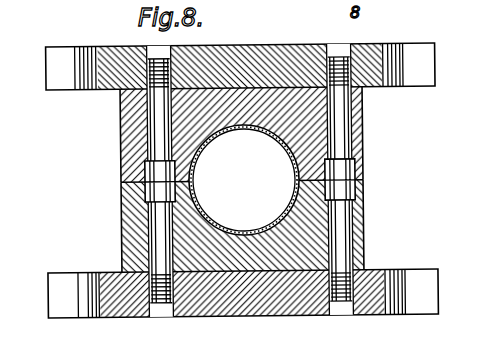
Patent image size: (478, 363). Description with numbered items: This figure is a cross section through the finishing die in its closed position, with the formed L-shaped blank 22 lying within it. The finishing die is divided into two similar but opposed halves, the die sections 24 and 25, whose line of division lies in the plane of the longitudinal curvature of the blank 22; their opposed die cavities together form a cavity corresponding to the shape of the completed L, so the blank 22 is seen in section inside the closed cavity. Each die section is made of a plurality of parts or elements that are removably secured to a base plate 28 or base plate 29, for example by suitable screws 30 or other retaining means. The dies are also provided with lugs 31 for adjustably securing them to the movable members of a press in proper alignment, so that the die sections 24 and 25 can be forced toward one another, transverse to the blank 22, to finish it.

The blank 22 is at (242, 128).
The die section 24 is at (121, 138).
The die section 25 is at (121, 218).
The base plate 28 is at (240, 45).
The base plate 29 is at (247, 313).
The screws 30 is at (145, 191).
The lugs 31 is at (428, 68).